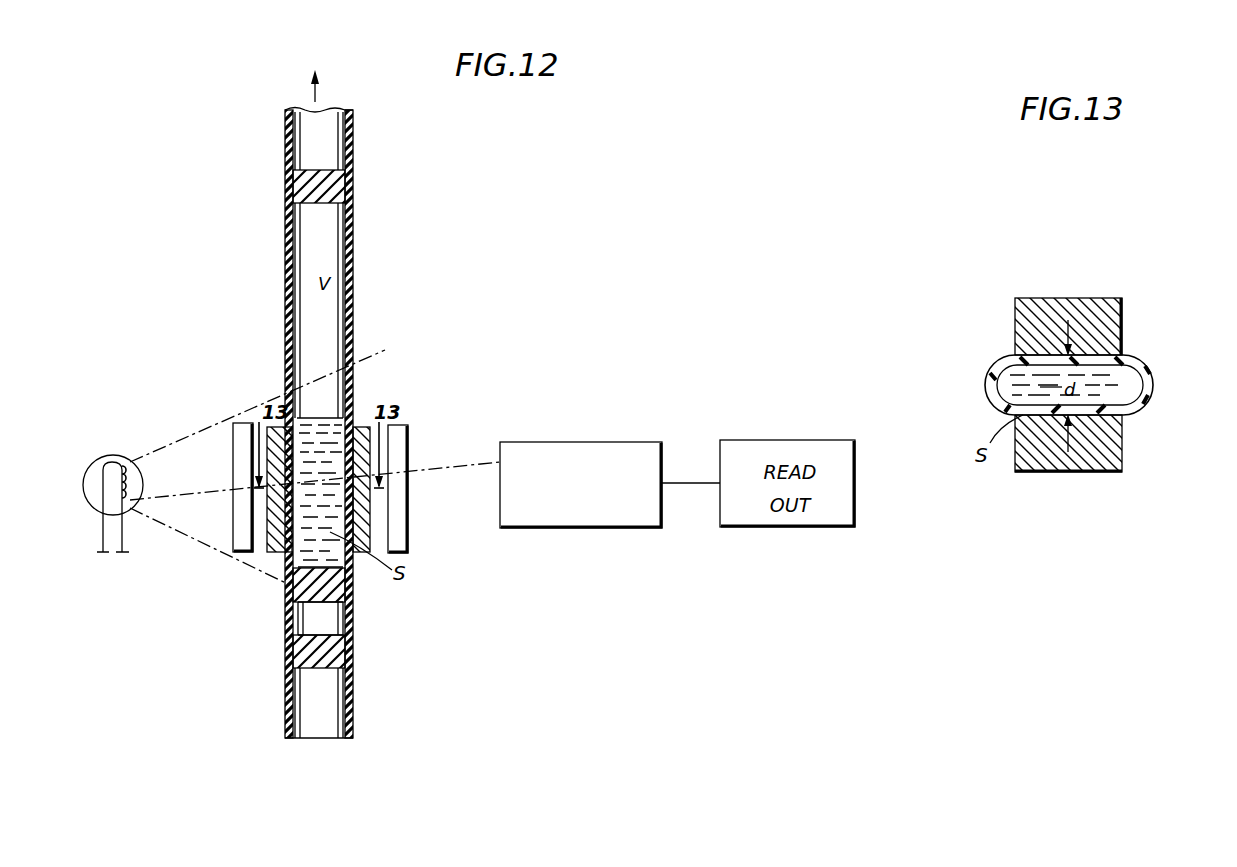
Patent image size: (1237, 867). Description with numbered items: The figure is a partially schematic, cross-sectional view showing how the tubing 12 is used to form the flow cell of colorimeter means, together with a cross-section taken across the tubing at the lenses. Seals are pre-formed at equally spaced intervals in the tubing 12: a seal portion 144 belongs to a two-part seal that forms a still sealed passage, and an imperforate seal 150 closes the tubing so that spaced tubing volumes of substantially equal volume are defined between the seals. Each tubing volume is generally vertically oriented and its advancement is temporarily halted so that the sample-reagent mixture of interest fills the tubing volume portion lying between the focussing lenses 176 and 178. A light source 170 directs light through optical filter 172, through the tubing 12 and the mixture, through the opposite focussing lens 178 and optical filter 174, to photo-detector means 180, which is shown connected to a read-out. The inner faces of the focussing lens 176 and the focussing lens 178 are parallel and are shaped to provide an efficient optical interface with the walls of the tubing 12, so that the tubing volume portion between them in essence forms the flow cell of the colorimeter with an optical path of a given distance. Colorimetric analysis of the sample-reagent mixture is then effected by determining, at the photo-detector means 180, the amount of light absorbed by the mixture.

In FIG. 12, the tubing 12 is at (287, 694).
In FIG. 13, the tubing 12 is at (1153, 378).
In FIG. 12, the seal portion 144 is at (355, 590).
In FIG. 12, the imperforate seal 150 is at (352, 190).
In FIG. 12, the light source 170 is at (93, 505).
In FIG. 12, the optical filter 172 is at (233, 422).
In FIG. 12, the optical filter 174 is at (403, 430).
In FIG. 12, the focussing lens 176 is at (273, 553).
In FIG. 13, the focussing lens 176 is at (1118, 302).
In FIG. 12, the focussing lens 178 is at (360, 427).
In FIG. 13, the focussing lens 178 is at (1060, 472).
In FIG. 12, the photo-detector means 180 is at (590, 450).